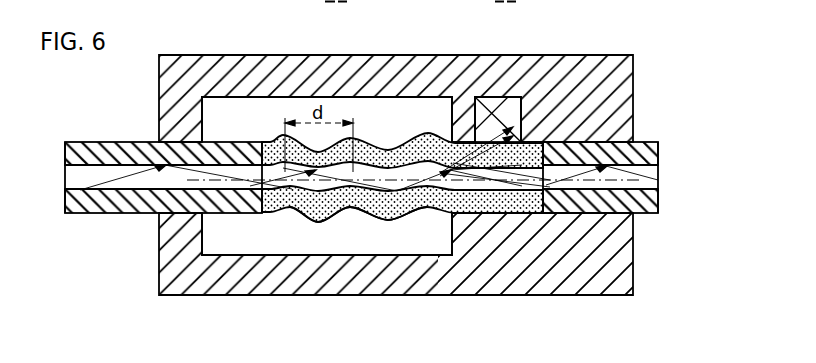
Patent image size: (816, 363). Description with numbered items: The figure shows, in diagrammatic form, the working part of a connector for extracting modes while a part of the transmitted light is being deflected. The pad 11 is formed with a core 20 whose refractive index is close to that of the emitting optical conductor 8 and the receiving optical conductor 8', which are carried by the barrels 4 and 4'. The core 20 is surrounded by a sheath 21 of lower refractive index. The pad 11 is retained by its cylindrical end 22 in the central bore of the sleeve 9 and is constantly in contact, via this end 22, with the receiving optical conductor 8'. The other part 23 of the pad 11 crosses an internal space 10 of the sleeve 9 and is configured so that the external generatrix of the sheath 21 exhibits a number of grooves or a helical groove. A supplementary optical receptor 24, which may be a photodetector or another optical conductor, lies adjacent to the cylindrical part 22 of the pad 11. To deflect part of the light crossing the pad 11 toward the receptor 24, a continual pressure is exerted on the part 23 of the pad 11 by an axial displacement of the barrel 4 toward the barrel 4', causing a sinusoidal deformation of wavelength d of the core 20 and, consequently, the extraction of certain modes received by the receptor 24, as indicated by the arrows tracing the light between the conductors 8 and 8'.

The barrel 4 is at (163, 140).
The barrel 4' is at (621, 140).
The emitting optical conductor 8 is at (177, 219).
The receiving optical conductor 8' is at (569, 211).
The sleeve 9 is at (196, 270).
The internal space 10 is at (218, 112).
The pad 11 is at (376, 128).
The core 20 is at (407, 173).
The sheath 21 is at (310, 205).
The cylindrical end 22 is at (505, 213).
The other part of the pad 23 is at (350, 208).
The supplementary optical receptor 24 is at (502, 104).